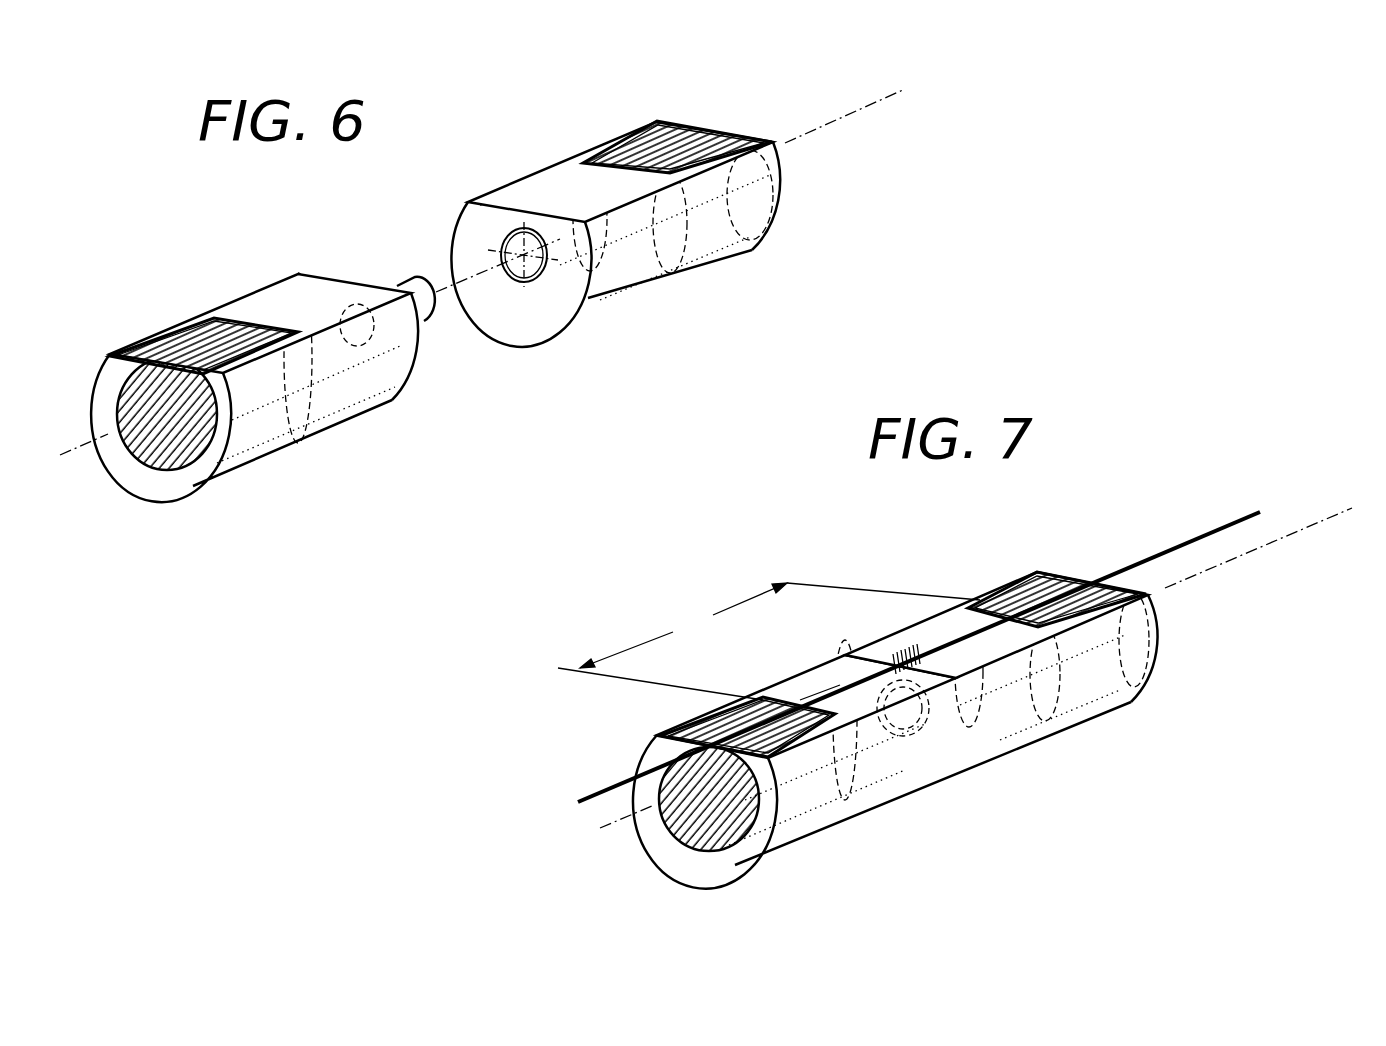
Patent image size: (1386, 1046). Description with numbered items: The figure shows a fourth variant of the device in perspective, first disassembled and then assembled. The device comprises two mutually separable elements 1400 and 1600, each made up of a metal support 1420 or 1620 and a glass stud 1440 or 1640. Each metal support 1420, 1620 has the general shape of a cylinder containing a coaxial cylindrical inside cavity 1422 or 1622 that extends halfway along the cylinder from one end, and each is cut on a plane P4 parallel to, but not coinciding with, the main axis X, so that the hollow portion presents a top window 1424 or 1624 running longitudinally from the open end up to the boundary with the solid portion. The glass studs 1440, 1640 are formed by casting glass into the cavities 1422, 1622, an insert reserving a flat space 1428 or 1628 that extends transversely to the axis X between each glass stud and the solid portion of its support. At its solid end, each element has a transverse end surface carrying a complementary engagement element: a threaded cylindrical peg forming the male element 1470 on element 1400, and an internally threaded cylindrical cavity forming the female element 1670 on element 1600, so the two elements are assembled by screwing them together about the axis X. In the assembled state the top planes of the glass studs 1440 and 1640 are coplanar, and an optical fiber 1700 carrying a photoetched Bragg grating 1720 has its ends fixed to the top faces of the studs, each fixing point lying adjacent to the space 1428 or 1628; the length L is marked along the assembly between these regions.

In FIG. 6, the separable element 1400 is at (276, 380).
In FIG. 7, the separable element 1400 is at (775, 752).
In FIG. 6, the metal support 1420 is at (310, 426).
In FIG. 7, the metal support 1420 is at (847, 812).
In FIG. 6, the cylindrical inside cavity 1422 is at (175, 465).
In FIG. 7, the cylindrical inside cavity 1422 is at (720, 850).
In FIG. 6, the top window 1424 is at (145, 345).
In FIG. 7, the top window 1424 is at (695, 728).
In FIG. 6, the flat space 1428 is at (285, 328).
In FIG. 7, the flat space 1428 is at (830, 712).
In FIG. 6, the glass stud 1440 is at (125, 430).
In FIG. 7, the glass stud 1440 is at (658, 822).
In FIG. 6, the male element 1470 is at (412, 290).
In FIG. 6, the separable element 1600 is at (723, 222).
In FIG. 7, the separable element 1600 is at (1110, 638).
In FIG. 6, the metal support 1620 is at (690, 271).
In FIG. 7, the metal support 1620 is at (1067, 723).
In FIG. 6, the cylindrical inside cavity 1622 is at (745, 120).
In FIG. 7, the cylindrical inside cavity 1622 is at (1120, 570).
In FIG. 6, the top window 1624 is at (628, 138).
In FIG. 7, the top window 1624 is at (1010, 580).
In FIG. 6, the flat space 1628 is at (603, 142).
In FIG. 7, the flat space 1628 is at (985, 598).
In FIG. 6, the glass stud 1640 is at (684, 128).
In FIG. 7, the glass stud 1640 is at (1072, 578).
In FIG. 6, the female element 1670 is at (530, 278).
In FIG. 7, the female element 1670 is at (903, 708).
In FIG. 7, the optical fiber 1700 is at (1222, 527).
In FIG. 7, the Bragg grating 1720 is at (903, 662).
In FIG. 6, the cutting plane P4 is at (262, 297).
In FIG. 7, the cutting plane P4 is at (810, 677).
In FIG. 6, the main axis X is at (890, 88).
In FIG. 7, the main axis X is at (1352, 510).
In FIG. 7, the length L is at (769, 641).